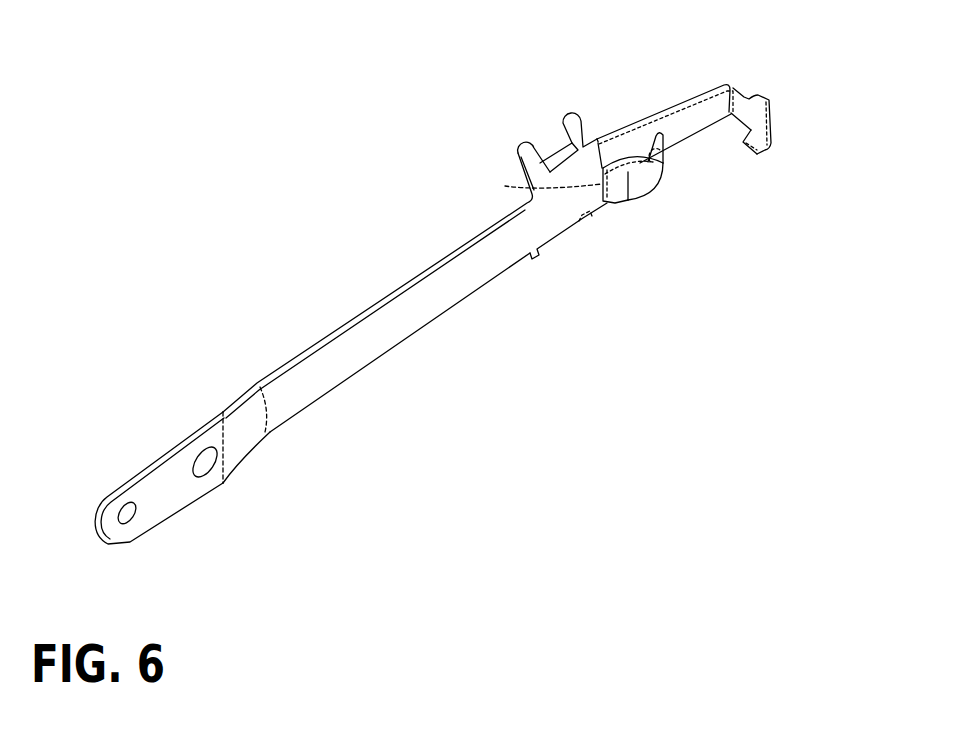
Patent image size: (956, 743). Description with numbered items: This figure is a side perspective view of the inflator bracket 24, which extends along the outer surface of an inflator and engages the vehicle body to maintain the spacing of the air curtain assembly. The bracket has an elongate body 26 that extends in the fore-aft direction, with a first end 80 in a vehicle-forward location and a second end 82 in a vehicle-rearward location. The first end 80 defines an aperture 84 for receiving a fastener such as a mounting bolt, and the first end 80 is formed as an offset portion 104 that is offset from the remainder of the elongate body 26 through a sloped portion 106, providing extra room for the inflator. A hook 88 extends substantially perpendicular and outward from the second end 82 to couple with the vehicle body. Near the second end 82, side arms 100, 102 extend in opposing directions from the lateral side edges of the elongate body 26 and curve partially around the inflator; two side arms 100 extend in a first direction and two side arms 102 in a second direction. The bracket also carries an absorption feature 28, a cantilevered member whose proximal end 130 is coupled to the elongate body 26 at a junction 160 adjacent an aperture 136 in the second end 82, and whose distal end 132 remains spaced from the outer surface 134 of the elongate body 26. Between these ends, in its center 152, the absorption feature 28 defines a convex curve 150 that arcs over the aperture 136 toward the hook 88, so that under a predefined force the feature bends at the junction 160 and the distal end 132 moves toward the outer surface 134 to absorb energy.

The inflator bracket 24 is at (469, 285).
The elongate body 26 is at (368, 333).
The absorption feature 28 is at (640, 163).
The first end 80 is at (175, 497).
The second end 82 is at (703, 110).
The aperture 84 is at (125, 502).
The hook 88 is at (772, 119).
The side arms 100 is at (519, 152).
The side arms 102 is at (532, 258).
The offset portion 104 is at (222, 411).
The sloped portion 106 is at (247, 452).
The proximal end 130 is at (612, 203).
The distal end 132 is at (660, 177).
The outer surface 134 is at (687, 100).
The aperture 136 is at (630, 160).
The curve 150 is at (663, 147).
The center 152 is at (640, 187).
The junction 160 is at (505, 186).